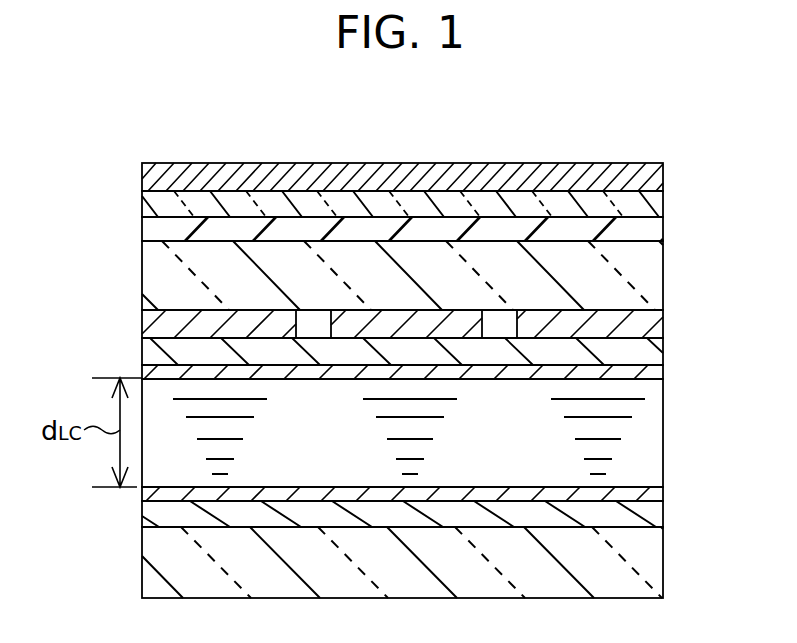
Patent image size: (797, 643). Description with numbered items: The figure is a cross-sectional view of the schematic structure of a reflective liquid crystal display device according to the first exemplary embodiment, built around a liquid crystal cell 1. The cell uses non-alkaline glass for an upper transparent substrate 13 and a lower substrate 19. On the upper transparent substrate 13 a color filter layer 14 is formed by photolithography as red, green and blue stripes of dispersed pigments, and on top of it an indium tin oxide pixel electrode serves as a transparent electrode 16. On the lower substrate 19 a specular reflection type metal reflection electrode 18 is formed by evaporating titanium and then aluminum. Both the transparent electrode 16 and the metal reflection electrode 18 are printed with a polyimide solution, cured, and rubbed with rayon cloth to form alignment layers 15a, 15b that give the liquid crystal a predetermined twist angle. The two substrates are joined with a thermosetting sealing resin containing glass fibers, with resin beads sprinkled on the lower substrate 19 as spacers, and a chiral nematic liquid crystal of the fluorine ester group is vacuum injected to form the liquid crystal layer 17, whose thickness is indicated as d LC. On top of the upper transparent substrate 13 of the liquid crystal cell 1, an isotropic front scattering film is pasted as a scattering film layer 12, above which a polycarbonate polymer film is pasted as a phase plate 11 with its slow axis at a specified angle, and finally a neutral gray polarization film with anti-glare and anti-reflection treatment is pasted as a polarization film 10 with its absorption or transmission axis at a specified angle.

The liquid crystal cell 1 is at (457, 379).
The polarization film 10 is at (665, 175).
The phase plate 11 is at (665, 203).
The scattering film layer 12 is at (665, 229).
The upper transparent substrate 13 is at (665, 272).
The color filter layer 14 is at (665, 315).
The transparent electrode 16 is at (665, 342).
The alignment layer 15a is at (665, 373).
The liquid crystal layer 17 is at (665, 431).
The alignment layer 15b is at (665, 488).
The metal reflection electrode 18 is at (665, 518).
The lower substrate 19 is at (437, 562).